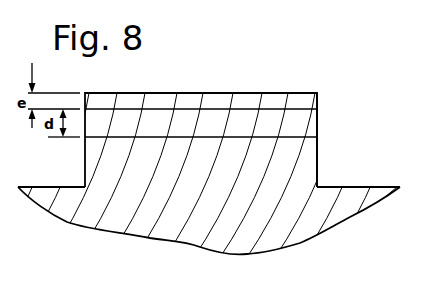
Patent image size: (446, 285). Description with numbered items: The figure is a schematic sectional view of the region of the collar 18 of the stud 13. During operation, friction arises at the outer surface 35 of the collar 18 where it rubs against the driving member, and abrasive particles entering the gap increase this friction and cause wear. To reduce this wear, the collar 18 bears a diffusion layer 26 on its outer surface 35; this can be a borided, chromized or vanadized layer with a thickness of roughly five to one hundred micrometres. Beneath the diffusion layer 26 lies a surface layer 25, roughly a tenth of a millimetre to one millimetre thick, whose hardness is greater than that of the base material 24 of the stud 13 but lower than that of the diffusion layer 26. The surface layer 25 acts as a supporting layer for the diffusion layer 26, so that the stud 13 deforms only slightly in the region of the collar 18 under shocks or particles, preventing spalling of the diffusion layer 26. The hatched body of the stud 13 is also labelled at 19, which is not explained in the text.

The stud 13 is at (344, 168).
The collar 18 is at (322, 88).
The step 19 is at (50, 192).
The base material 24 is at (188, 174).
The surface layer 25 is at (298, 128).
The diffusion layer 26 is at (253, 100).
The outer surface 35 is at (198, 85).